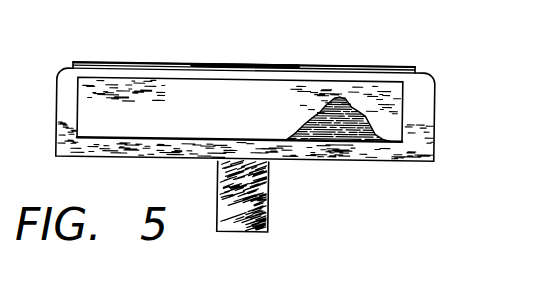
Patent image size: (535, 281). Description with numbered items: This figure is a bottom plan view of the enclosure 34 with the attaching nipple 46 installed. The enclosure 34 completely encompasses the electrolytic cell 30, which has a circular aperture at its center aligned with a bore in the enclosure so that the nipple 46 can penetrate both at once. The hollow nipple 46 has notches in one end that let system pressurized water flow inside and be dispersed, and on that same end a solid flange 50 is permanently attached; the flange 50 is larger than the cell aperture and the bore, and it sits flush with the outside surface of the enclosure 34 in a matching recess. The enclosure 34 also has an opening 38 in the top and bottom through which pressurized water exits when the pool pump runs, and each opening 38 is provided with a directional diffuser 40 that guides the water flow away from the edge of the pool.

The enclosure 34 is at (428, 77).
The flange 50 is at (232, 62).
The directional diffuser 40 is at (137, 80).
The opening 38 is at (345, 95).
The electrolytic cell 30 is at (340, 128).
The nipple 46 is at (270, 190).